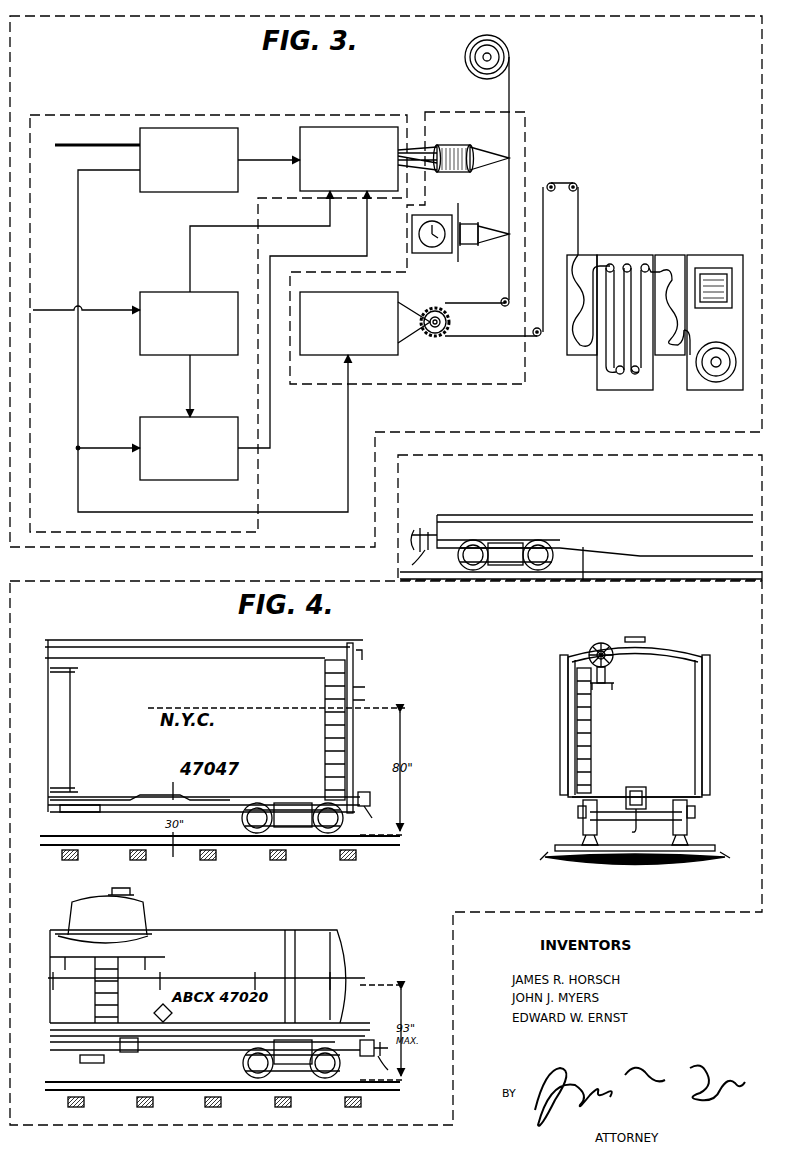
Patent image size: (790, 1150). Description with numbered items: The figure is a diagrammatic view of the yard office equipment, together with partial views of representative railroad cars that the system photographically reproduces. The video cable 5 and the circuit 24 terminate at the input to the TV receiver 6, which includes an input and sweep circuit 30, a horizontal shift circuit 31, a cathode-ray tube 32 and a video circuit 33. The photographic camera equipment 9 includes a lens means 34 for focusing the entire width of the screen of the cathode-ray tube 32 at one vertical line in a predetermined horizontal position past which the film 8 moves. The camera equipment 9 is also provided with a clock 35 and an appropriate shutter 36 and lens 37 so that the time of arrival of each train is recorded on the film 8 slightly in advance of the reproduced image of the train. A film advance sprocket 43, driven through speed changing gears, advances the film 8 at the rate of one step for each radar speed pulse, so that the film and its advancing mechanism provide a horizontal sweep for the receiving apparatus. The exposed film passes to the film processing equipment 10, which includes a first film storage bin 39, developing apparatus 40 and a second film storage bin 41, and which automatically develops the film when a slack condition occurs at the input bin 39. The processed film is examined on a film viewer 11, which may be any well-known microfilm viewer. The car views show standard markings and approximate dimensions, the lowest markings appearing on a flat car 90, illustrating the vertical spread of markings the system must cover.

The video cable 5 is at (85, 145).
The TV receiver 6 is at (238, 114).
The film 8 is at (512, 88).
The photographic camera equipment 9 is at (525, 128).
The film processing equipment 10 is at (659, 316).
The film viewer 11 is at (722, 255).
The circuit 24 is at (76, 312).
The input and sweep circuit 30 is at (163, 128).
The horizontal shift circuit 31 is at (218, 356).
The cathode-ray tube 32 is at (365, 127).
The video circuit 33 is at (140, 474).
The lens means 34 is at (470, 147).
The clock 35 is at (398, 350).
The shutter 36 is at (460, 258).
The lens 37 is at (482, 222).
The first film storage bin 39 is at (580, 258).
The developing apparatus 40 is at (624, 256).
The second film storage bin 41 is at (665, 256).
The film advance sprocket 43 is at (437, 306).
The flat car 90 is at (590, 514).